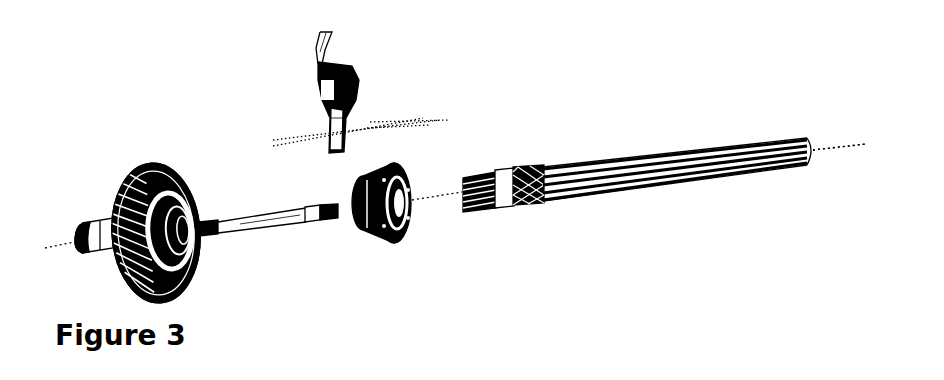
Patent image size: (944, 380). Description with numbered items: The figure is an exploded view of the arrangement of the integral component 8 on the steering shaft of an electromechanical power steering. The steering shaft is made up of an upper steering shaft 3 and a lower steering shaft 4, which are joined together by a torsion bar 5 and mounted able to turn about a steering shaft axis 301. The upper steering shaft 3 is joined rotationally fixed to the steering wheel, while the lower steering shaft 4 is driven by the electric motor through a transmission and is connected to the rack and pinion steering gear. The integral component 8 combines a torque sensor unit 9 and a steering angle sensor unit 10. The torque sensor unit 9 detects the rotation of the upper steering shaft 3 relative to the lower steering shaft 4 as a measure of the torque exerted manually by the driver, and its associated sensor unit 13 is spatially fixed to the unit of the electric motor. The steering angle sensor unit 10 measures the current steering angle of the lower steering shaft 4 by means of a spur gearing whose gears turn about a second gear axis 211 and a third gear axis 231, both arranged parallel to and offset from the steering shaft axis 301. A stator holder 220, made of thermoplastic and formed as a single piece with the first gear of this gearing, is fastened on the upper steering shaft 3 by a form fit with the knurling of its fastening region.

The upper steering shaft 3 is at (660, 155).
The lower steering shaft 4 is at (83, 222).
The torsion bar 5 is at (257, 224).
The integral component 8 is at (387, 76).
The torque sensor unit 9 is at (387, 76).
The steering angle sensor unit 10 is at (366, 58).
The sensor unit 13 is at (312, 124).
The second gear axis 211 is at (423, 118).
The stator holder 220 is at (363, 232).
The third gear axis 231 is at (367, 128).
The steering shaft axis 301 is at (840, 147).